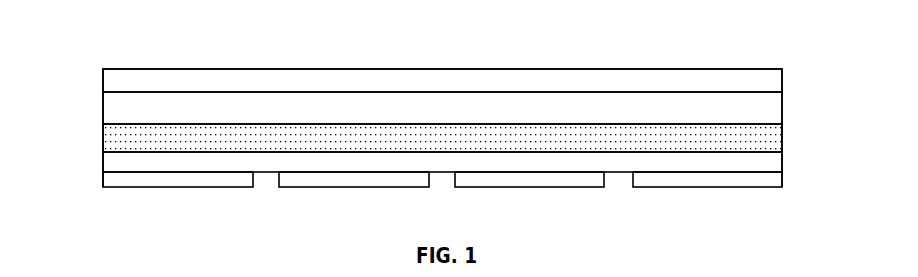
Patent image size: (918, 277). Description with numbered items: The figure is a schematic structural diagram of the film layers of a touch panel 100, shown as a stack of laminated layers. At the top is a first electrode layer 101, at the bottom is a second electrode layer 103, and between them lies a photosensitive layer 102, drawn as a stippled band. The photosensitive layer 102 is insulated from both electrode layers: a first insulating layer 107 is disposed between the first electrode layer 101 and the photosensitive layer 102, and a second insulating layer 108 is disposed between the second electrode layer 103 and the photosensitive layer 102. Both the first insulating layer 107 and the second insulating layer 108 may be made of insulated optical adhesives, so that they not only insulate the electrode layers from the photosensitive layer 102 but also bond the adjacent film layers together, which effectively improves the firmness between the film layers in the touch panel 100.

The touch panel 100 is at (80, 35).
The first electrode layer 101 is at (118, 88).
The photosensitive layer 102 is at (118, 134).
The second electrode layer 103 is at (118, 179).
The first insulating layer 107 is at (774, 105).
The second insulating layer 108 is at (774, 162).